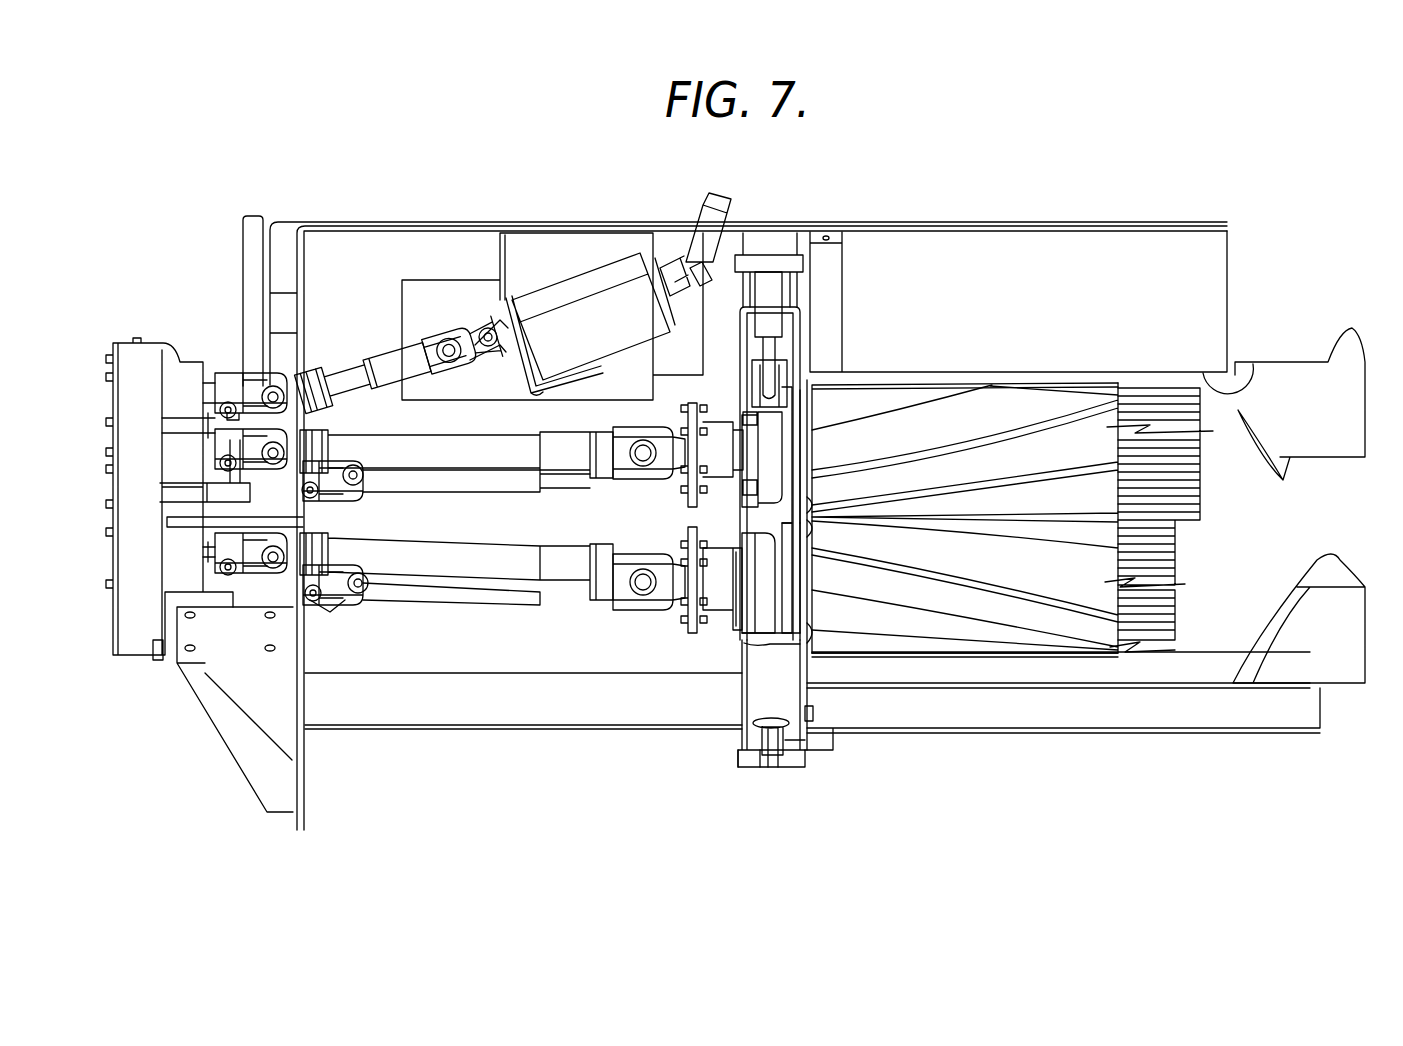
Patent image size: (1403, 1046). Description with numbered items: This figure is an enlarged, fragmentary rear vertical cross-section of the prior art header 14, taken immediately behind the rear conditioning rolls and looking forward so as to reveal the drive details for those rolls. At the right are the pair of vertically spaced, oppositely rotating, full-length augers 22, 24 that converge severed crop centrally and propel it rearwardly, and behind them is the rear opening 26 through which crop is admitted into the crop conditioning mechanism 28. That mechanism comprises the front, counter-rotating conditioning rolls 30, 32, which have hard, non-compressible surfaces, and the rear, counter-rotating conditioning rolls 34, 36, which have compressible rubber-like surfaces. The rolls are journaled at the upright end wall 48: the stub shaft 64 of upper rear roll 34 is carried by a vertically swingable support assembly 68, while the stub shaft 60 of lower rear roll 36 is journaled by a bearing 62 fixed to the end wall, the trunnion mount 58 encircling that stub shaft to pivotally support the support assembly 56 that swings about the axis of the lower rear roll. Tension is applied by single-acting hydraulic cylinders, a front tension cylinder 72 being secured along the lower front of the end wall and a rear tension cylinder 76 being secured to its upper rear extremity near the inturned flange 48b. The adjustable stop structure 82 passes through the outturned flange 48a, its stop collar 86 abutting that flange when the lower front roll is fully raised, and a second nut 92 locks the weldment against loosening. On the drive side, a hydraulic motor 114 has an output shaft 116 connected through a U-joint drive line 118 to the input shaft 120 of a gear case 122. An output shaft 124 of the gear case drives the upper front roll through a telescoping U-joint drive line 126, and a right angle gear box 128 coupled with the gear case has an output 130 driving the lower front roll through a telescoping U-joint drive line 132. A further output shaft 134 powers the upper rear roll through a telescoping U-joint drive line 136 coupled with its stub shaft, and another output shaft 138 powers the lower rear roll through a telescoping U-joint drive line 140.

The header 14 is at (920, 180).
The auger 22 is at (1345, 362).
The auger 24 is at (1345, 590).
The rear opening 26 is at (1250, 373).
The crop conditioning mechanism 28 is at (1010, 366).
The top front conditioning roll 30 is at (1217, 504).
The lower front conditioning roll 32 is at (1190, 620).
The upper rear conditioning roll 34 is at (1106, 370).
The lower rear conditioning roll 36 is at (1084, 668).
The end wall 48 is at (802, 330).
The outturned flange 48a is at (745, 710).
The inturned flange 48b is at (755, 310).
The support assembly 56 is at (757, 630).
The trunnion mount 58 is at (775, 582).
The stub shaft 60 is at (718, 600).
The bearing 62 is at (797, 606).
The stub shaft 64 is at (790, 452).
The support assembly 68 is at (768, 412).
The tension hydraulic cylinder 72 is at (767, 767).
The tension hydraulic cylinder 76 is at (775, 290).
The adjustable stop structure 82 is at (812, 749).
The stop collar 86 is at (815, 712).
The second nut 92 is at (738, 742).
The hydraulic motor 114 is at (612, 270).
The output shaft 116 is at (512, 370).
The U-joint drive line 118 is at (347, 373).
The input shaft 120 is at (213, 382).
The gear case 122 is at (145, 350).
The output shaft 124 is at (240, 486).
The telescoping U-joint drive line 126 is at (446, 482).
The gear box 128 is at (265, 523).
The output 130 is at (324, 604).
The telescoping U-joint drive line 132 is at (418, 592).
The output shaft 134 is at (208, 434).
The telescoping U-joint drive line 136 is at (455, 438).
The output shaft 138 is at (208, 558).
The telescoping U-joint drive line 140 is at (522, 578).